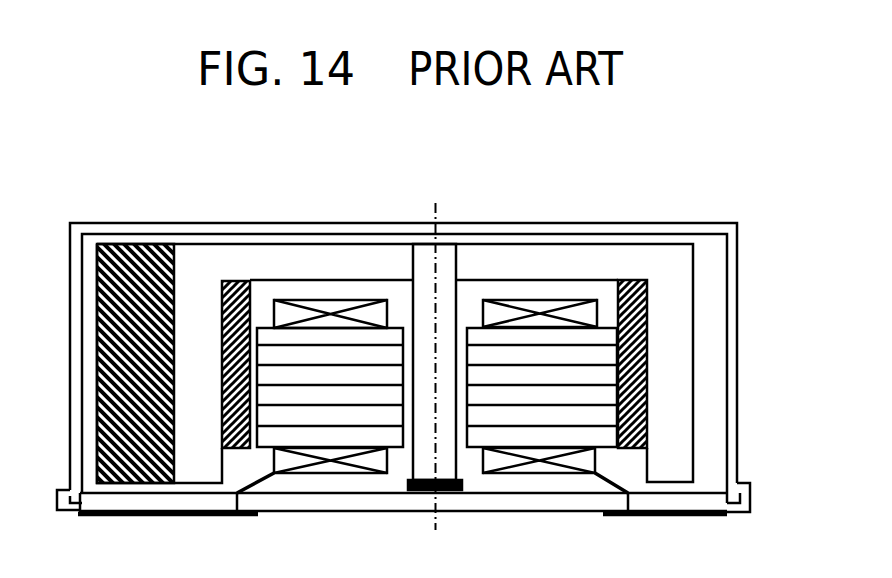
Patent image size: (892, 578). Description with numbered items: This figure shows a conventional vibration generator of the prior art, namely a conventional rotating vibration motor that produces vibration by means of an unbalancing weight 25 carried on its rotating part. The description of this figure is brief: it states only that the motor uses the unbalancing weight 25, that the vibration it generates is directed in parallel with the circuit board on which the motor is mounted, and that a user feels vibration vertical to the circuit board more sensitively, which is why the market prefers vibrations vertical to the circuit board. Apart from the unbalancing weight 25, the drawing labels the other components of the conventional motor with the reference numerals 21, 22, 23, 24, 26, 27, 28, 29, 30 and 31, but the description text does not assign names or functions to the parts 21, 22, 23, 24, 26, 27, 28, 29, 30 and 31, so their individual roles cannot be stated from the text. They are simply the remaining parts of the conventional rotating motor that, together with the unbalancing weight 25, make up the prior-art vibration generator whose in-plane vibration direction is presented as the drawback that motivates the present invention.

The stator core 21 is at (578, 355).
The coil 22 is at (535, 307).
The frame 23 is at (675, 302).
The yoke 24 is at (234, 292).
The unbalancing weight 25 is at (132, 265).
The casing 26 is at (332, 227).
The rotary shaft 27 is at (447, 258).
The bearing 28 is at (450, 493).
The base plate 29 is at (563, 502).
The mounting leg 30 is at (752, 481).
The bottom plate 31 is at (165, 515).